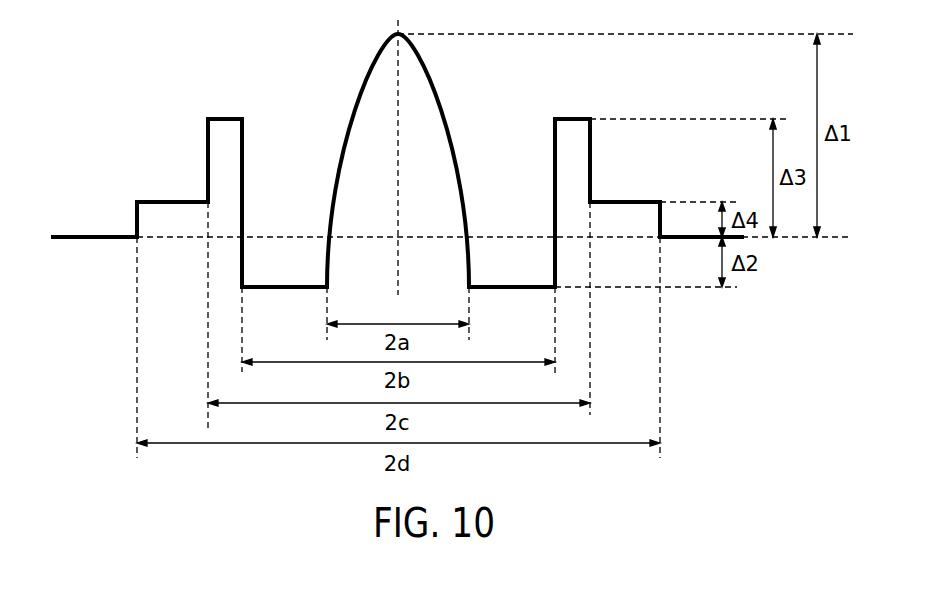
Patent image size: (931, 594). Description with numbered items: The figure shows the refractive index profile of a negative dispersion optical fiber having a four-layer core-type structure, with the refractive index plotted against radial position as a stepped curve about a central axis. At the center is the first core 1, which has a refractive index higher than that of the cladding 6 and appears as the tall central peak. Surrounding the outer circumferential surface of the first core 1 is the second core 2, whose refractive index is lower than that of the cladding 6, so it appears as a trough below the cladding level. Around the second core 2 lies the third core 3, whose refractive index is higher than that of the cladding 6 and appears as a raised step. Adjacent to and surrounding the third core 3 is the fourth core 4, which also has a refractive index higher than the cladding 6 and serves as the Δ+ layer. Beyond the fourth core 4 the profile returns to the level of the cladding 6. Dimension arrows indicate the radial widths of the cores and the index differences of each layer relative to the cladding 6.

The first core 1 is at (438, 75).
The second core 2 is at (285, 286).
The third core 3 is at (227, 118).
The fourth core 4 is at (172, 201).
The cladding 6 is at (92, 236).